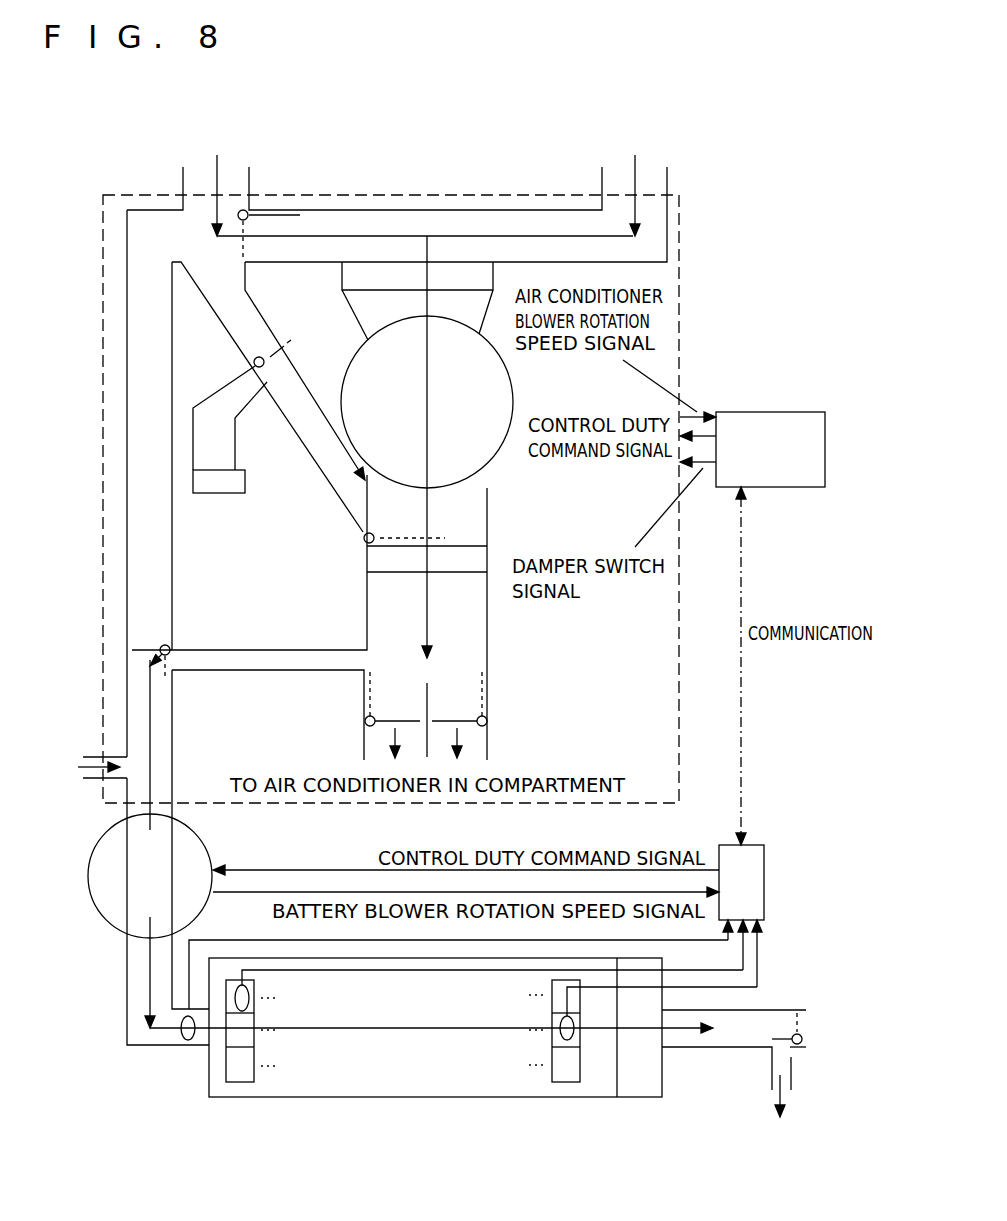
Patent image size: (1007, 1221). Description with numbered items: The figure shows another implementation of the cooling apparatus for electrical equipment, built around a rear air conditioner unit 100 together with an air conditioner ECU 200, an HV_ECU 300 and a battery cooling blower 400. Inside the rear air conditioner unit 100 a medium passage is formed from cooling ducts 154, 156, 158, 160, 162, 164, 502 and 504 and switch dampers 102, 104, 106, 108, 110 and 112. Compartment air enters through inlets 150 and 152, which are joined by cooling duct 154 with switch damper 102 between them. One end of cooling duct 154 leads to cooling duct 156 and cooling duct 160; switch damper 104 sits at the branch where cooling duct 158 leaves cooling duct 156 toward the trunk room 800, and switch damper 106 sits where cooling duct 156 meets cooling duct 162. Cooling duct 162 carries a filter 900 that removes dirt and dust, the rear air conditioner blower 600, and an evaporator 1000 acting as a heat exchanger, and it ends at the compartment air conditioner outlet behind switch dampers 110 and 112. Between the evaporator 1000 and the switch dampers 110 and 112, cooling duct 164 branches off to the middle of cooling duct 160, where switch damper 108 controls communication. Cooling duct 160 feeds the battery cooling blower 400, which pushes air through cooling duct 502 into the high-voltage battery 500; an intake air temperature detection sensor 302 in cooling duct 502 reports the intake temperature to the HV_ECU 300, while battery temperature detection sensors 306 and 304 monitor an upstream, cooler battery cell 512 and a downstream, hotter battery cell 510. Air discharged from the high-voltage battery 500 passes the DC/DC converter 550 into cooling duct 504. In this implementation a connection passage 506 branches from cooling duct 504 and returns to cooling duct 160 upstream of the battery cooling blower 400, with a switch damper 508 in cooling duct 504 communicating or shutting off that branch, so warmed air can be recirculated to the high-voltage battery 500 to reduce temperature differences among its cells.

The rear air conditioner unit 100 is at (136, 192).
The switch damper 102 is at (240, 210).
The switch damper 104 is at (260, 356).
The switch damper 106 is at (364, 533).
The switch damper 108 is at (163, 645).
The switch damper 110 is at (372, 727).
The switch damper 112 is at (482, 727).
The inlet 150 is at (203, 180).
The inlet 152 is at (648, 180).
The cooling duct 154 is at (523, 210).
The cooling duct 156 is at (262, 300).
The cooling duct 158 is at (247, 413).
The cooling duct 160 is at (127, 377).
The cooling duct 162 is at (366, 605).
The cooling duct 164 is at (228, 670).
The air conditioner ECU 200 is at (755, 410).
The HV_ECU 300 is at (764, 880).
The intake air temperature detection sensor 302 is at (188, 1040).
The battery temperature detection sensor 304 is at (552, 1036).
The battery temperature detection sensor 306 is at (254, 997).
The battery cooling blower 400 is at (93, 842).
The high-voltage battery 500 is at (425, 1099).
The cooling duct 502 is at (127, 978).
The cooling duct 504 is at (687, 1047).
The connection passage 506 is at (98, 755).
The switch damper 508 is at (805, 1037).
The battery cell 510 is at (552, 1022).
The battery cell 512 is at (229, 980).
The DC/DC converter 550 is at (638, 1098).
The rear air conditioner blower 600 is at (433, 315).
The trunk room 800 is at (222, 493).
The filter 900 is at (368, 275).
The evaporator 1000 is at (463, 562).